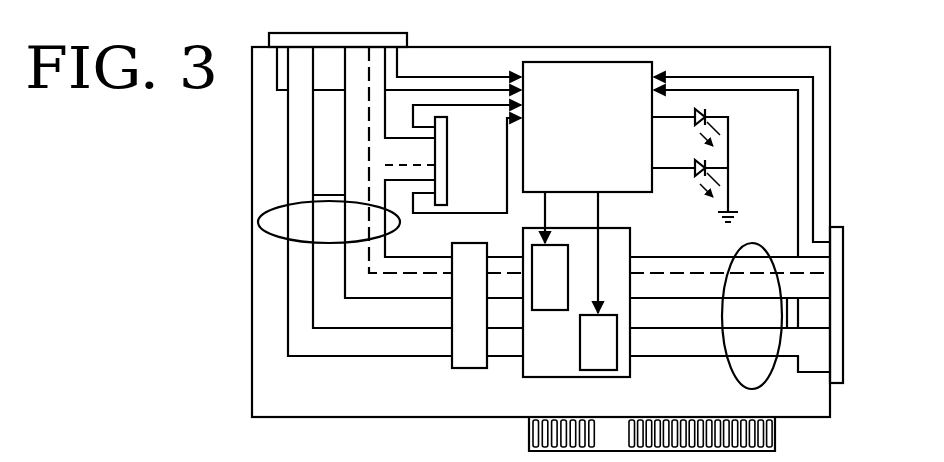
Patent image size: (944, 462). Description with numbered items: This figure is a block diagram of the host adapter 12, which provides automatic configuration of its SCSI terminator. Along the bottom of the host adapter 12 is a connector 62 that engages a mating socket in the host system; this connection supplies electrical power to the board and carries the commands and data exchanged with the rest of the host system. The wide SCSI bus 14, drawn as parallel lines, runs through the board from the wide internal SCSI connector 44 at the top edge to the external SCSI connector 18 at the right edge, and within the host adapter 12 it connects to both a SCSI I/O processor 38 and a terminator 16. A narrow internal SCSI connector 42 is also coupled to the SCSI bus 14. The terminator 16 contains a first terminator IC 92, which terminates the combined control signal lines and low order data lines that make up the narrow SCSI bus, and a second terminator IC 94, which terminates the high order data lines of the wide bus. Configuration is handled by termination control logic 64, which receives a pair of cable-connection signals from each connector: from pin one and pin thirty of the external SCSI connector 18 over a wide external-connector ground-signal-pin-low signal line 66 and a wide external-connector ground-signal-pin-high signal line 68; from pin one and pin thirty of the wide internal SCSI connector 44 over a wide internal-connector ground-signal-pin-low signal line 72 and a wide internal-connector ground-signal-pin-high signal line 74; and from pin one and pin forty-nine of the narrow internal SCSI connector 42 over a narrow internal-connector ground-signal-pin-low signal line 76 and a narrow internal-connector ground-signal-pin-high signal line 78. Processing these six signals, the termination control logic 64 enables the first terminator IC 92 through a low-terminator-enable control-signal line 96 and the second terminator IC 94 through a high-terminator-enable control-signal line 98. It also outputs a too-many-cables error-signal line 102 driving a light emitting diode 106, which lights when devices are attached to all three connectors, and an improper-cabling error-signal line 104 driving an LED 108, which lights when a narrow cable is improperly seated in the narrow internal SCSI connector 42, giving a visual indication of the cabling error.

The host adapter 12 is at (383, 418).
The SCSI bus 14 is at (278, 206).
The terminator 16 is at (630, 376).
The external SCSI connector 18 is at (843, 233).
The SCSI I/O processor 38 is at (470, 368).
The narrow internal SCSI connector 42 is at (447, 178).
The wide internal SCSI connector 44 is at (269, 38).
The connector 62 is at (529, 432).
The termination control logic 64 is at (587, 127).
The wide external-connector ground-signal-pin-low signal line 66 is at (732, 76).
The wide external-connector ground-signal-pin-high signal line 68 is at (797, 229).
The wide internal-connector ground-signal-pin-low signal line 72 is at (478, 76).
The wide internal-connector ground-signal-pin-high signal line 74 is at (277, 72).
The narrow internal-connector ground-signal-pin-low signal line 76 is at (455, 108).
The narrow internal-connector ground-signal-pin-high signal line 78 is at (460, 213).
The first terminator IC 92 is at (545, 310).
The second terminator IC 94 is at (604, 313).
The low-terminator-enable control-signal line 96 is at (547, 206).
The high-terminator-enable control-signal line 98 is at (600, 206).
The too-many-cables error-signal line 102 is at (673, 118).
The improper-cabling error-signal line 104 is at (673, 170).
The light emitting diode 106 is at (712, 115).
The LED 108 is at (712, 167).